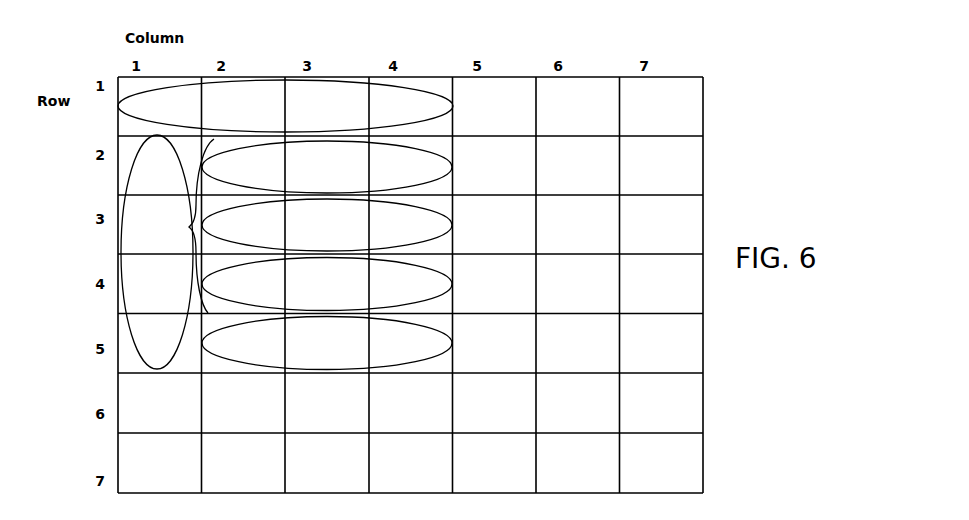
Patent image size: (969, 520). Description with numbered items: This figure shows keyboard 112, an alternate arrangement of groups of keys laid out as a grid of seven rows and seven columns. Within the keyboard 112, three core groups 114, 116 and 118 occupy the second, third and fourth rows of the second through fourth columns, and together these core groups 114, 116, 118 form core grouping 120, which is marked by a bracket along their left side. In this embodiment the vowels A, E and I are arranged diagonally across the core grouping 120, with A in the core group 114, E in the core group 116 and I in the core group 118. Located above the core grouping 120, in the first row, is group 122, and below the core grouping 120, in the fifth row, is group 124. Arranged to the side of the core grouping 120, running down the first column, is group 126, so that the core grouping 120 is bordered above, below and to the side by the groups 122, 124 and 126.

The keyboard 112 is at (721, 167).
The core group 114 is at (448, 168).
The core group 116 is at (437, 225).
The core group 118 is at (438, 285).
The core grouping 120 is at (203, 312).
The group 122 is at (452, 107).
The group 124 is at (436, 344).
The group 126 is at (153, 215).